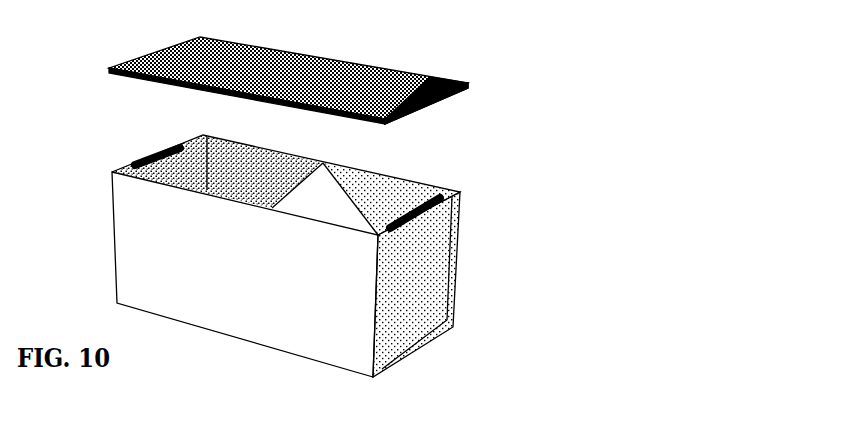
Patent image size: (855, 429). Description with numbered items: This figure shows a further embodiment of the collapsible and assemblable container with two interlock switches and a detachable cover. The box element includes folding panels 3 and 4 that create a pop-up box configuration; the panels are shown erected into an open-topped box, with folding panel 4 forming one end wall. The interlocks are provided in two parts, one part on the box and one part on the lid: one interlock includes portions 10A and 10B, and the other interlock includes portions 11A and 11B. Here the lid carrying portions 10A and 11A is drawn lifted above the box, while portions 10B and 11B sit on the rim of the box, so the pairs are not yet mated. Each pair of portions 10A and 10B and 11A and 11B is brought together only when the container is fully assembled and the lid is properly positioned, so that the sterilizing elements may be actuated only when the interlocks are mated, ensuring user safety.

The folding panel 3 is at (200, 148).
The folding panel 4 is at (410, 312).
The interlock portion 10A is at (288, 72).
The interlock portion 10B is at (139, 145).
The interlock portion 11A is at (442, 102).
The interlock portion 11B is at (461, 214).